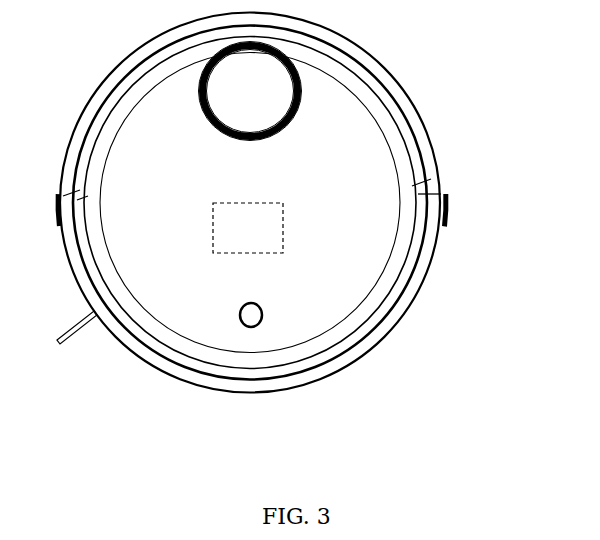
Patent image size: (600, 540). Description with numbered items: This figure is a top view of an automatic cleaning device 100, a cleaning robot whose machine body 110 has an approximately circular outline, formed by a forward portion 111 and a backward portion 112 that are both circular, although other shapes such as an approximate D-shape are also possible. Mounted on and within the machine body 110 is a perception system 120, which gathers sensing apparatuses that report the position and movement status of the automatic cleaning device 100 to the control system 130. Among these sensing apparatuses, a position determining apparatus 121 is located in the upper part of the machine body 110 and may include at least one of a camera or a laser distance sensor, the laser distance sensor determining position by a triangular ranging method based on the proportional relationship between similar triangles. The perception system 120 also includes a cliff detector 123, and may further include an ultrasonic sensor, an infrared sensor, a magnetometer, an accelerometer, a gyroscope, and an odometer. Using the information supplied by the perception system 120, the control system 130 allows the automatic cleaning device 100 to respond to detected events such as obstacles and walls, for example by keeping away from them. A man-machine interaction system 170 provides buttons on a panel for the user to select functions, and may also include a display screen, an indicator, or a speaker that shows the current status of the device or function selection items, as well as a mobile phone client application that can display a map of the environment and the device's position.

The automatic cleaning device 100 is at (413, 21).
The machine body 110 is at (375, 118).
The forward portion 111 is at (397, 303).
The backward portion 112 is at (370, 70).
The perception system 120 is at (310, 200).
The position determining apparatus 121 is at (290, 123).
The cliff detector 123 is at (440, 243).
The control system 130 is at (282, 253).
The man-machine interaction system 170 is at (238, 321).